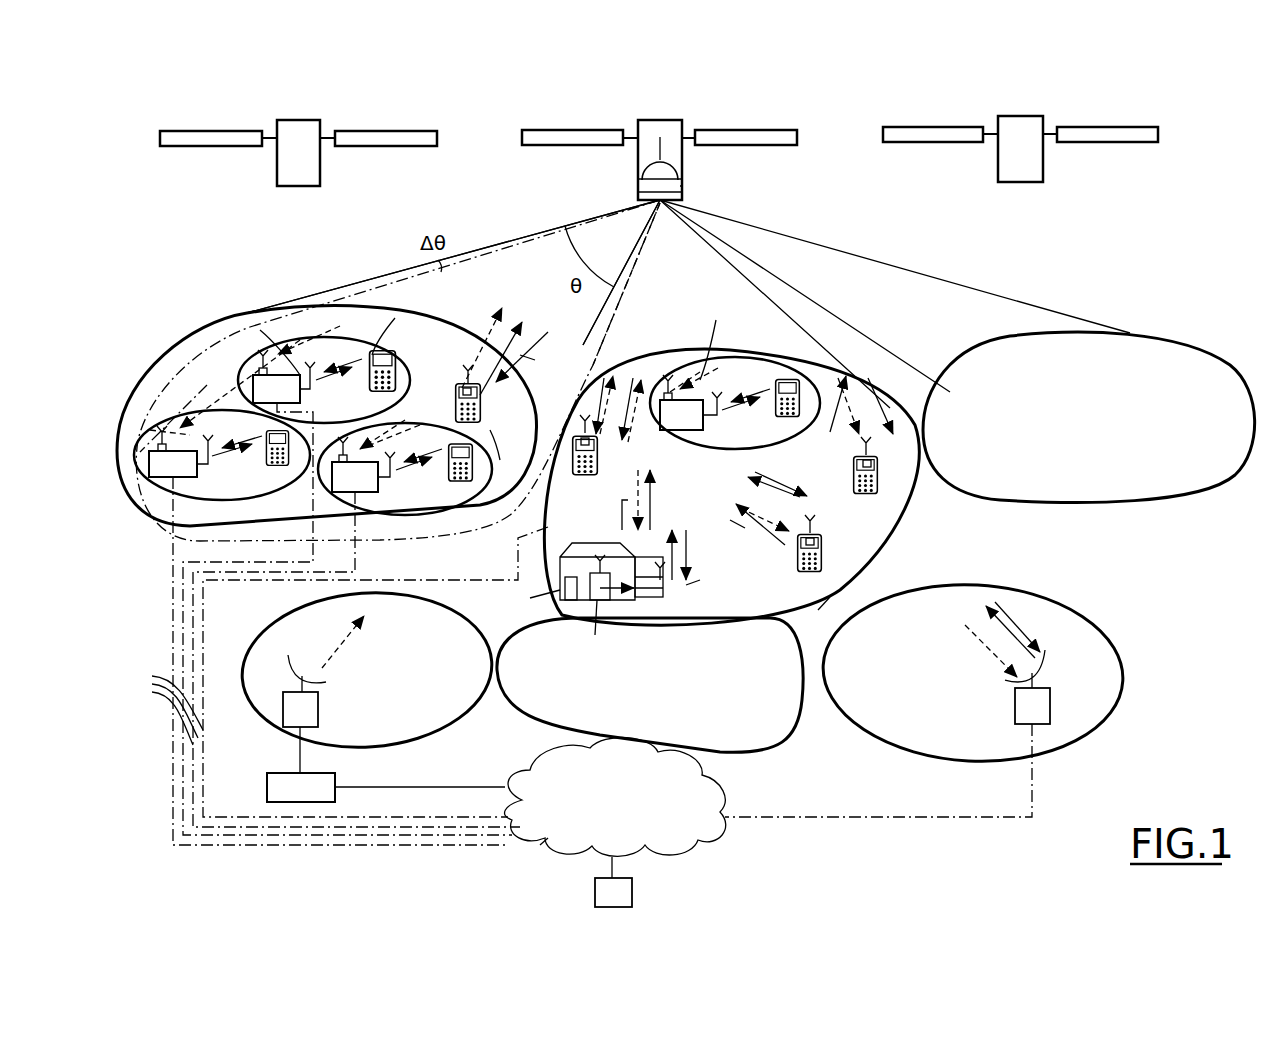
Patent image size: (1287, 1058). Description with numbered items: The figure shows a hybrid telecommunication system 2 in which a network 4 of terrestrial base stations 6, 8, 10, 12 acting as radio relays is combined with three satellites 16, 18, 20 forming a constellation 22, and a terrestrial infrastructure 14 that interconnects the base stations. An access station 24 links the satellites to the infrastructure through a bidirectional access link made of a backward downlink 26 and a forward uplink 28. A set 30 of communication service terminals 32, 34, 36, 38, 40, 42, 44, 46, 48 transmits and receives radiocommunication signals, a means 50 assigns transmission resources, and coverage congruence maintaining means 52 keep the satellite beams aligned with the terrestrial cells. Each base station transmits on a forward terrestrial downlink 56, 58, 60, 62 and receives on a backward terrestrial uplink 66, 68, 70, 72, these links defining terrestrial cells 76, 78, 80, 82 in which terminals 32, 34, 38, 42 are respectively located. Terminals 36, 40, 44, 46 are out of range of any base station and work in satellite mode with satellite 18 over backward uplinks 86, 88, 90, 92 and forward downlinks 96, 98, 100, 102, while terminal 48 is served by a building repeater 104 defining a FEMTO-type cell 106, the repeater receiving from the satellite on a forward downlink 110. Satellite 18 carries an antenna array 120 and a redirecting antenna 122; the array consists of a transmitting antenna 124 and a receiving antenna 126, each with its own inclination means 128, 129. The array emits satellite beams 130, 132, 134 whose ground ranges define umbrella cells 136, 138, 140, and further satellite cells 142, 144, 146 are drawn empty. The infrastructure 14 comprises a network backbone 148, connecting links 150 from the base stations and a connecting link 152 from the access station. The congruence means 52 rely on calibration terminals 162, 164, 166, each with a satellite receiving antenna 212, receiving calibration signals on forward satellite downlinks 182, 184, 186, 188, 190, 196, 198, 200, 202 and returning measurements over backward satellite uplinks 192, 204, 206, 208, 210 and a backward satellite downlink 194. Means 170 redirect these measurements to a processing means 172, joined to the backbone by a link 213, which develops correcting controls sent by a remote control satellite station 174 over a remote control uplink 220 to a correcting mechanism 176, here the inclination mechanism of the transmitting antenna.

The hybrid telecommunication system 2 is at (139, 250).
The network 4 is at (160, 348).
The terrestrial base station 6 is at (307, 345).
The terrestrial base station 8 is at (201, 434).
The terrestrial base station 10 is at (387, 452).
The terrestrial base station 12 is at (715, 368).
The terrestrial infrastructure 14 is at (746, 836).
The satellite 16 is at (277, 165).
The satellite 18 is at (659, 151).
The satellite 20 is at (998, 163).
The constellation 22 is at (268, 142).
The access station 24 is at (1050, 718).
The backward downlink 26 is at (980, 620).
The forward uplink 28 is at (1020, 635).
The set of communication service terminals 30 is at (920, 512).
The communication service terminal 32 is at (397, 365).
The communication service terminal 34 is at (270, 470).
The communication service terminal 36 is at (482, 415).
The communication service terminal 38 is at (455, 485).
The communication service terminal 40 is at (598, 470).
The communication service terminal 42 is at (785, 420).
The communication service terminal 44 is at (878, 480).
The communication service terminal 46 is at (822, 560).
The communication service terminal 48 is at (575, 600).
The means for assigning transmission resources 50 is at (632, 895).
The coverage congruence maintaining means 52 is at (808, 758).
The forward terrestrial downlink 56 is at (328, 385).
The forward terrestrial downlink 58 is at (240, 462).
The forward terrestrial downlink 60 is at (415, 478).
The forward terrestrial downlink 62 is at (745, 420).
The backward terrestrial uplink 66 is at (397, 323).
The backward terrestrial uplink 68 is at (232, 420).
The backward terrestrial uplink 70 is at (502, 453).
The backward terrestrial uplink 72 is at (730, 360).
The terrestrial radiocommunication cell 76 is at (240, 350).
The terrestrial radiocommunication cell 78 is at (270, 498).
The terrestrial radiocommunication cell 80 is at (418, 514).
The terrestrial radiocommunication cell 82 is at (715, 335).
The backward uplink 86 is at (532, 345).
The backward uplink 88 is at (640, 370).
The backward uplink 90 is at (860, 375).
The backward uplink 92 is at (775, 485).
The forward downlink 96 is at (530, 361).
The forward downlink 98 is at (655, 482).
The forward downlink 100 is at (688, 585).
The forward downlink 102 is at (790, 500).
The building repeater 104 is at (665, 600).
The FEMTO-type cell 106 is at (531, 601).
The forward downlink 110 is at (688, 550).
The antenna array 120 is at (575, 200).
The transmitting and/or receiving antenna 122 is at (663, 137).
The transmitting antenna 124 is at (650, 195).
The receiving antenna 126 is at (638, 178).
The inclination means 128 is at (682, 200).
The inclination means 129 is at (682, 188).
The satellite beam 130 is at (453, 272).
The satellite beam 132 is at (736, 304).
The satellite beam 134 is at (895, 296).
The satellite umbrella cell 136 is at (130, 403).
The satellite umbrella cell 138 is at (816, 612).
The satellite umbrella cell 140 is at (1220, 355).
The satellite cell 142 is at (372, 678).
The satellite cell 144 is at (728, 750).
The satellite cell 146 is at (991, 672).
The network backbone 148 is at (570, 860).
The connecting links 150 is at (156, 703).
The connecting link 152 is at (950, 820).
The calibration terminal of the first type 162 is at (240, 350).
The calibration terminal of the second type 164 is at (607, 626).
The calibration terminal 166 is at (462, 392).
The means for redirecting measurements 170 is at (368, 858).
The means for processing calibration measurements 172 is at (386, 779).
The remote control satellite station 174 is at (318, 718).
The mechanism for correcting the transmission radiation pattern 176 is at (676, 172).
The forward satellite downlink 182 is at (290, 330).
The forward satellite downlink 184 is at (185, 430).
The forward satellite downlink 186 is at (405, 425).
The forward satellite downlink 188 is at (692, 368).
The forward downlink 190 is at (616, 517).
The backward satellite uplink 192 is at (654, 502).
The backward satellite downlink 194 is at (982, 650).
The forward satellite downlink 196 is at (505, 325).
The forward satellite downlink 198 is at (618, 385).
The forward satellite downlink 200 is at (835, 370).
The forward satellite downlink 202 is at (730, 500).
The backward satellite uplink 204 is at (470, 345).
The backward satellite uplink 206 is at (606, 288).
The backward satellite uplink 208 is at (830, 370).
The backward satellite uplink 210 is at (750, 530).
The satellite receiving antenna 212 is at (247, 350).
The link 213 is at (370, 787).
The remote control uplink 220 is at (338, 652).